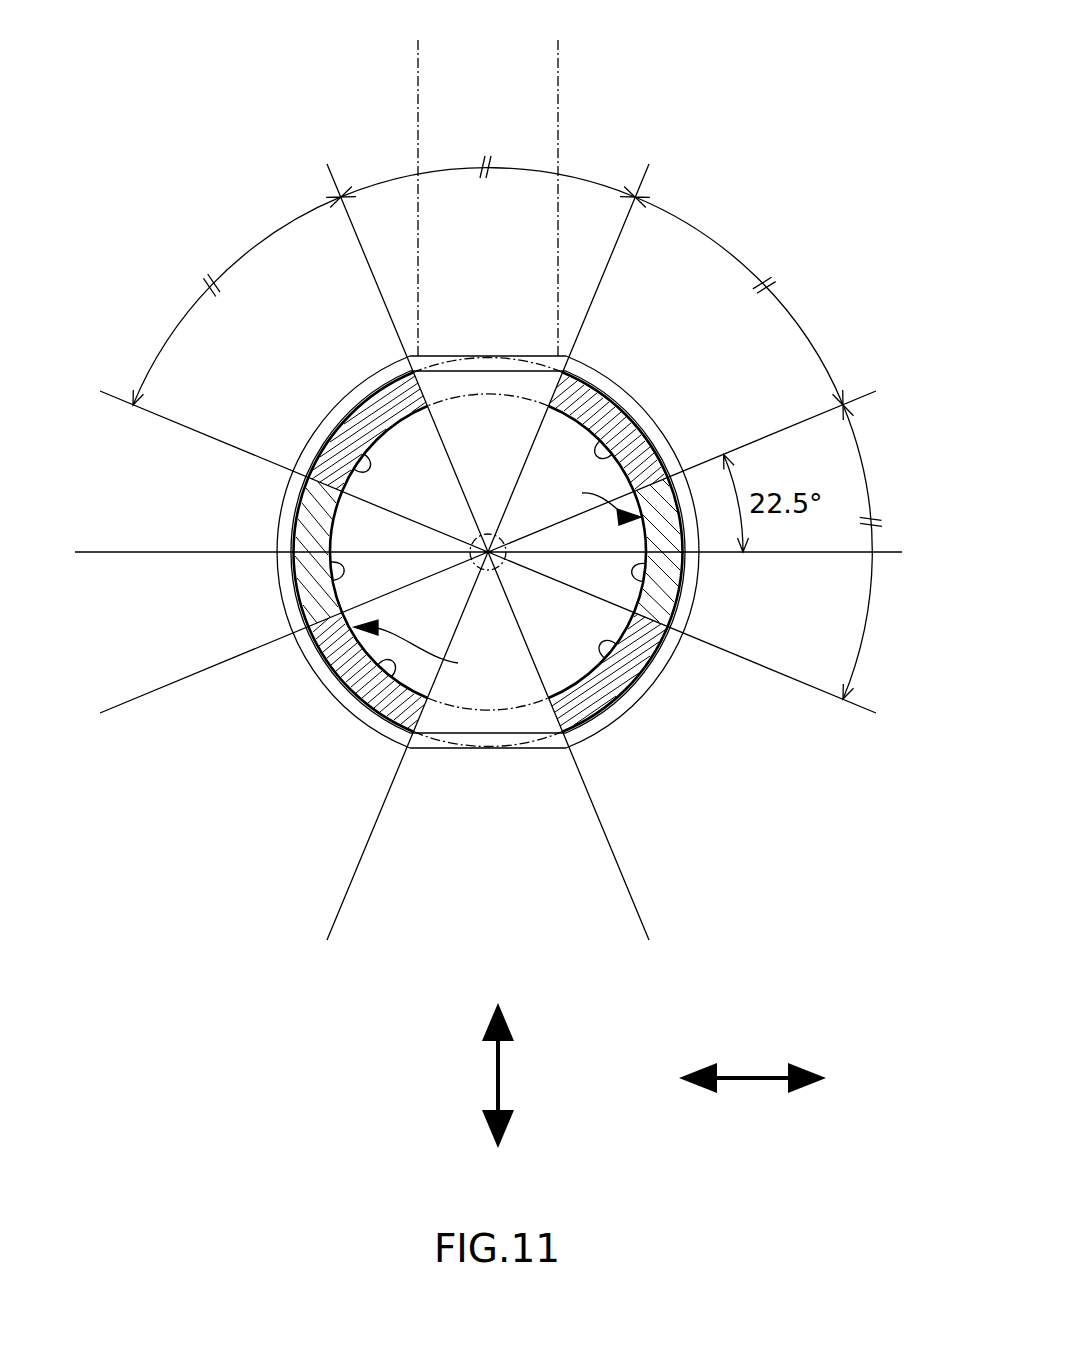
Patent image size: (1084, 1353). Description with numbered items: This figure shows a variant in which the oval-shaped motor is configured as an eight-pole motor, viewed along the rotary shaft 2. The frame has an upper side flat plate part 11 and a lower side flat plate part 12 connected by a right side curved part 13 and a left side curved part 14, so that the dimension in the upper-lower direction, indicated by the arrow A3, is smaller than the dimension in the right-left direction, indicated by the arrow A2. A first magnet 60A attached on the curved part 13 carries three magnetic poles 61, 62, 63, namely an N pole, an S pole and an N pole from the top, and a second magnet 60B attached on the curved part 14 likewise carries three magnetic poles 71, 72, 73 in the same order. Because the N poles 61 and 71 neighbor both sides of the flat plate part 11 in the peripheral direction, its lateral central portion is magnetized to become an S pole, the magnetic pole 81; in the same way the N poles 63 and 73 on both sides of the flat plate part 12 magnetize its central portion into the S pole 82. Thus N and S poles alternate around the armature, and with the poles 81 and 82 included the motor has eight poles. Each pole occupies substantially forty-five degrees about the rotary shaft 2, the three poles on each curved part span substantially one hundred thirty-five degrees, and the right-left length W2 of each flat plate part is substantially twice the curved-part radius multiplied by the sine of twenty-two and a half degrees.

The rotary shaft 2 is at (460, 520).
The upper side flat plate part 11 is at (468, 360).
The lower side flat plate part 12 is at (453, 747).
The right side curved part 13 is at (282, 514).
The left side curved part 14 is at (665, 665).
The first magnet 60A is at (434, 655).
The second magnet 60B is at (582, 499).
The magnetic pole 61 is at (346, 471).
The magnetic pole 62 is at (331, 575).
The magnetic pole 63 is at (384, 673).
The magnetic pole 71 is at (612, 455).
The magnetic pole 72 is at (644, 576).
The magnetic pole 73 is at (614, 659).
The magnetic pole 81 is at (500, 378).
The magnetic pole 82 is at (482, 730).
The length of the flat plate part in the right-left direction W2 is at (418, 87).
The arrow indicating right-left direction A2 is at (773, 1071).
The arrow indicating upper-lower direction A3 is at (497, 1067).